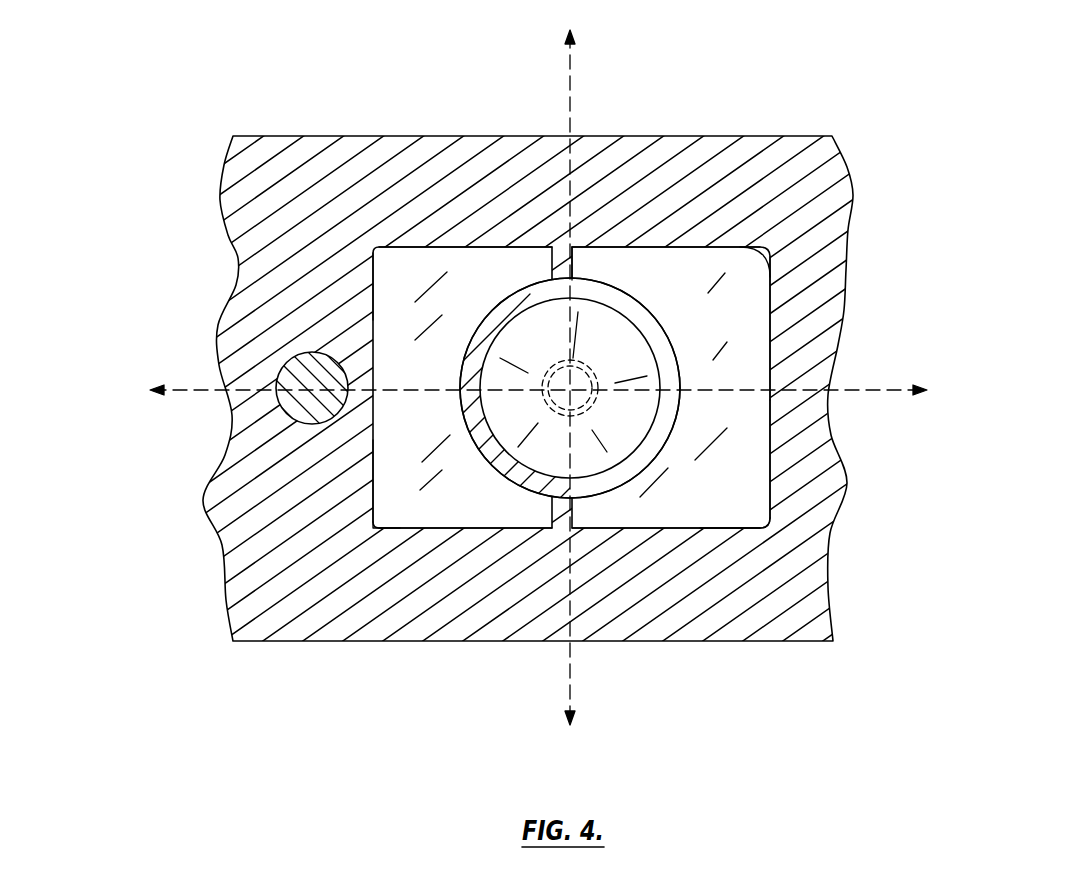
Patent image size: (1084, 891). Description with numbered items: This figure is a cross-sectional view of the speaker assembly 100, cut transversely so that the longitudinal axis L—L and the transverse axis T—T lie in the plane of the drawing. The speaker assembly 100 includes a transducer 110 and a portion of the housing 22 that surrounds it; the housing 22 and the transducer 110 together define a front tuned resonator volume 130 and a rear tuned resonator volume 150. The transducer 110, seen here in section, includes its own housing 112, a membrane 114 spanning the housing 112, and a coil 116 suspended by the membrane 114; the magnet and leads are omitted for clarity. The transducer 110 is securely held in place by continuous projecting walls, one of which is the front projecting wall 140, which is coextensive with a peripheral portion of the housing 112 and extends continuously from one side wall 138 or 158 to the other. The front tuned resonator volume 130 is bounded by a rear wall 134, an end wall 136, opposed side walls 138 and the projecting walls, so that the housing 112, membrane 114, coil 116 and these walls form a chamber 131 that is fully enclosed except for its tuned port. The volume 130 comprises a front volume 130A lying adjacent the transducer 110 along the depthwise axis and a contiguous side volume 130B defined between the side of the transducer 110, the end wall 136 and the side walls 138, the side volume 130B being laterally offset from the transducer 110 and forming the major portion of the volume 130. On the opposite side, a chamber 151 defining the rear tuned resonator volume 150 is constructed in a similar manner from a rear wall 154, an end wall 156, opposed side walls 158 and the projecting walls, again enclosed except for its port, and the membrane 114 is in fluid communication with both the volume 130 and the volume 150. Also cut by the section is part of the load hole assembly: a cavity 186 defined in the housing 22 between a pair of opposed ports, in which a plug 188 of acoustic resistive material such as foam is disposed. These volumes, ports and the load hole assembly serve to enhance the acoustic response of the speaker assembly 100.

The speaker assembly 100 is at (542, 380).
The housing 22 is at (813, 153).
The transducer 110 is at (575, 482).
The housing 112 is at (642, 462).
The membrane 114 is at (636, 417).
The coil 116 is at (582, 370).
The front tuned resonator volume 130 is at (688, 291).
The front volume 130A is at (621, 265).
The side volume 130B is at (730, 298).
The chamber 131 is at (771, 458).
The rear wall 134 is at (738, 510).
The end wall 136 is at (774, 319).
The side walls 138 is at (702, 248).
The front projecting wall 140 is at (486, 448).
The rear tuned resonator volume 150 is at (494, 291).
The chamber 151 is at (373, 469).
The rear wall 154 is at (373, 530).
The end wall 156 is at (381, 290).
The side walls 158 is at (438, 242).
The cavity 186 is at (297, 421).
The plug 188 is at (274, 400).